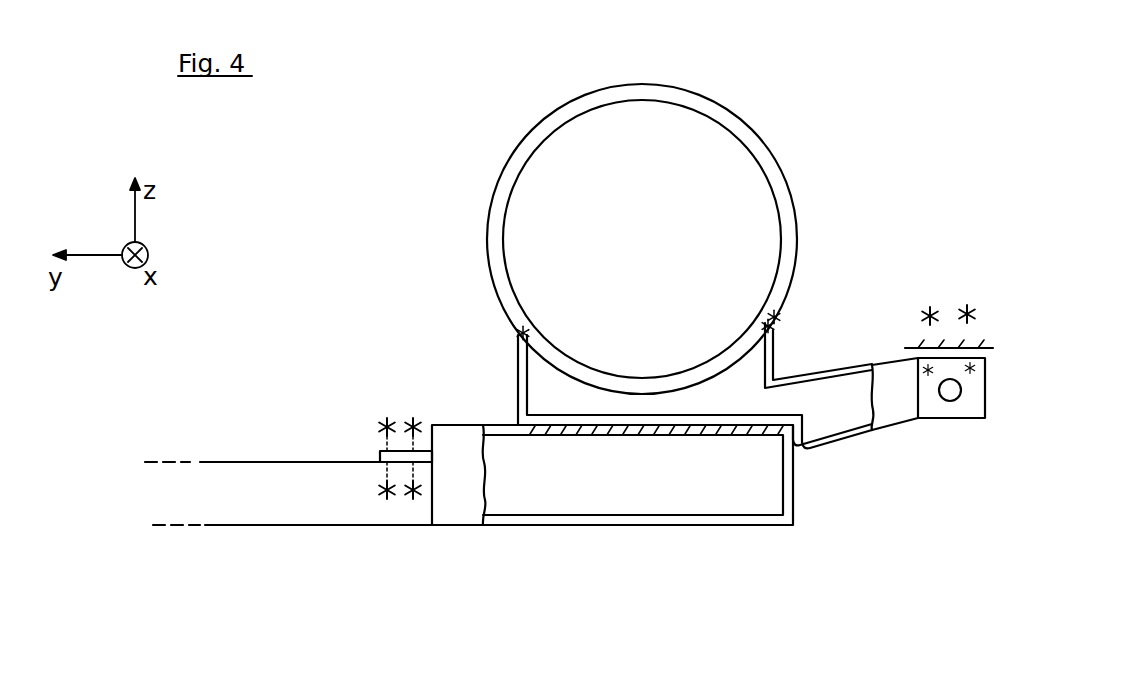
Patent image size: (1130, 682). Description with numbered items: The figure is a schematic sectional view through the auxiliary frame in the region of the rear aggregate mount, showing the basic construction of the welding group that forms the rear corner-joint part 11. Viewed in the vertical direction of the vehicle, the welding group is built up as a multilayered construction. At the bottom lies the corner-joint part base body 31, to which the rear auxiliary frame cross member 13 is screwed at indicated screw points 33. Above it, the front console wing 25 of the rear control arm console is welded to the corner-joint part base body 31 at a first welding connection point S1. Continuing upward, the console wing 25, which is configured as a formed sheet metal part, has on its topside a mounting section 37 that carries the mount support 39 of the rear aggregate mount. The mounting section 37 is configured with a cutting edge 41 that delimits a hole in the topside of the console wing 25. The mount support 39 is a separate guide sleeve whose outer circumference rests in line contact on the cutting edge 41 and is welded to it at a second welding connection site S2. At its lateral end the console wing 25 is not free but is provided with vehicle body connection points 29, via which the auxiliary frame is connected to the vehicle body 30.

The rear corner-joint part 11 is at (863, 612).
The rear auxiliary frame cross member 13 is at (232, 462).
The front console wing 25 is at (832, 447).
The vehicle body connection point 29 is at (933, 308).
The vehicle body 30 is at (992, 346).
The corner-joint part base body 31 is at (762, 520).
The screw points 33 is at (410, 420).
The mounting section 37 is at (297, 252).
The mount support 39 is at (677, 378).
The cutting edge 41 is at (522, 334).
The first welding connection point S1 is at (642, 430).
The second welding connection site S2 is at (522, 333).